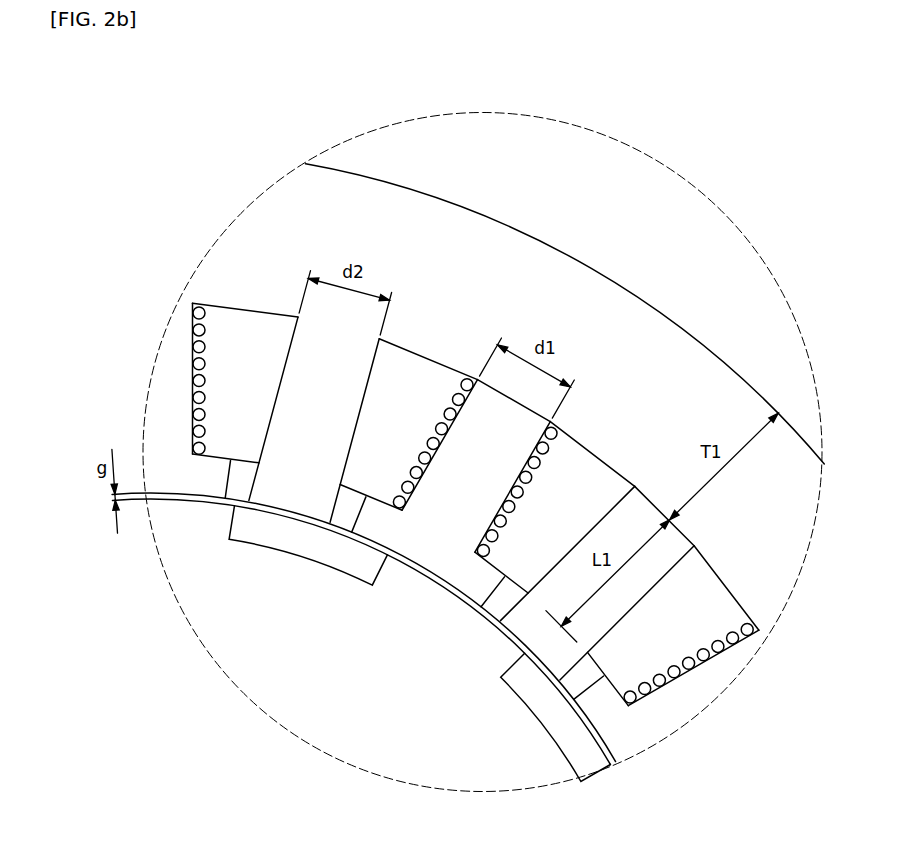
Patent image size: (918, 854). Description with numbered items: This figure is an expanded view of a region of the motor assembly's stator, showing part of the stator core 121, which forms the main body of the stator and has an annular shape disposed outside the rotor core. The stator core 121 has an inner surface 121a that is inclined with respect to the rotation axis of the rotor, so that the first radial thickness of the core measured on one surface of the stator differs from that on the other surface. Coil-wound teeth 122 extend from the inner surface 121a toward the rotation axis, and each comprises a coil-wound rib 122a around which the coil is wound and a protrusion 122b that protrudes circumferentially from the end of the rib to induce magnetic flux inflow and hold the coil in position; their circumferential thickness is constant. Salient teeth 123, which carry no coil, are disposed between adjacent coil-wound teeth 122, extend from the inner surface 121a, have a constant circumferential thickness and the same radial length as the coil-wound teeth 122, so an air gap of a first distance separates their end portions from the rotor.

The stator core 121 is at (293, 202).
The inner surface 121a is at (428, 357).
The coil-wound teeth 122 is at (100, 410).
The coil-wound rib 122a is at (177, 378).
The protrusion 122b is at (212, 477).
The salient teeth 123 is at (305, 390).